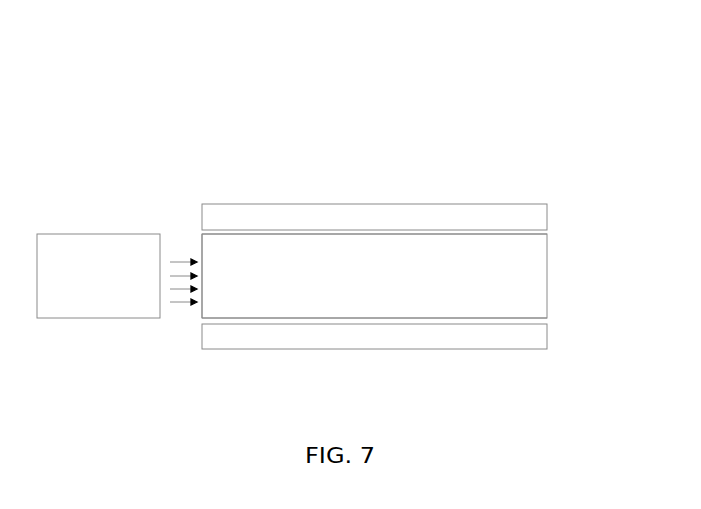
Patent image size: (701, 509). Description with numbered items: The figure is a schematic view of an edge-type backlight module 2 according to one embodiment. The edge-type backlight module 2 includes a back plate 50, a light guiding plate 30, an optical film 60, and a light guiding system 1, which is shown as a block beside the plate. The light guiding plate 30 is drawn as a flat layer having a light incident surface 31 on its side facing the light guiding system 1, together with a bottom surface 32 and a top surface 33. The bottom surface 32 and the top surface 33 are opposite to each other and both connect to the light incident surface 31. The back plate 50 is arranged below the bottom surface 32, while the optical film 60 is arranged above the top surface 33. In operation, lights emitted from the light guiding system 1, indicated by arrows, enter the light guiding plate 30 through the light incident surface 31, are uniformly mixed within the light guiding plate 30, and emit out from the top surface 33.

The edge-type backlight module 2 is at (375, 89).
The optical film 60 is at (478, 215).
The light guiding plate 30 is at (478, 278).
The back plate 50 is at (478, 337).
The light incident surface 31 is at (195, 250).
The top surface 33 is at (388, 235).
The bottom surface 32 is at (386, 318).
The light guiding system 1 is at (98, 276).